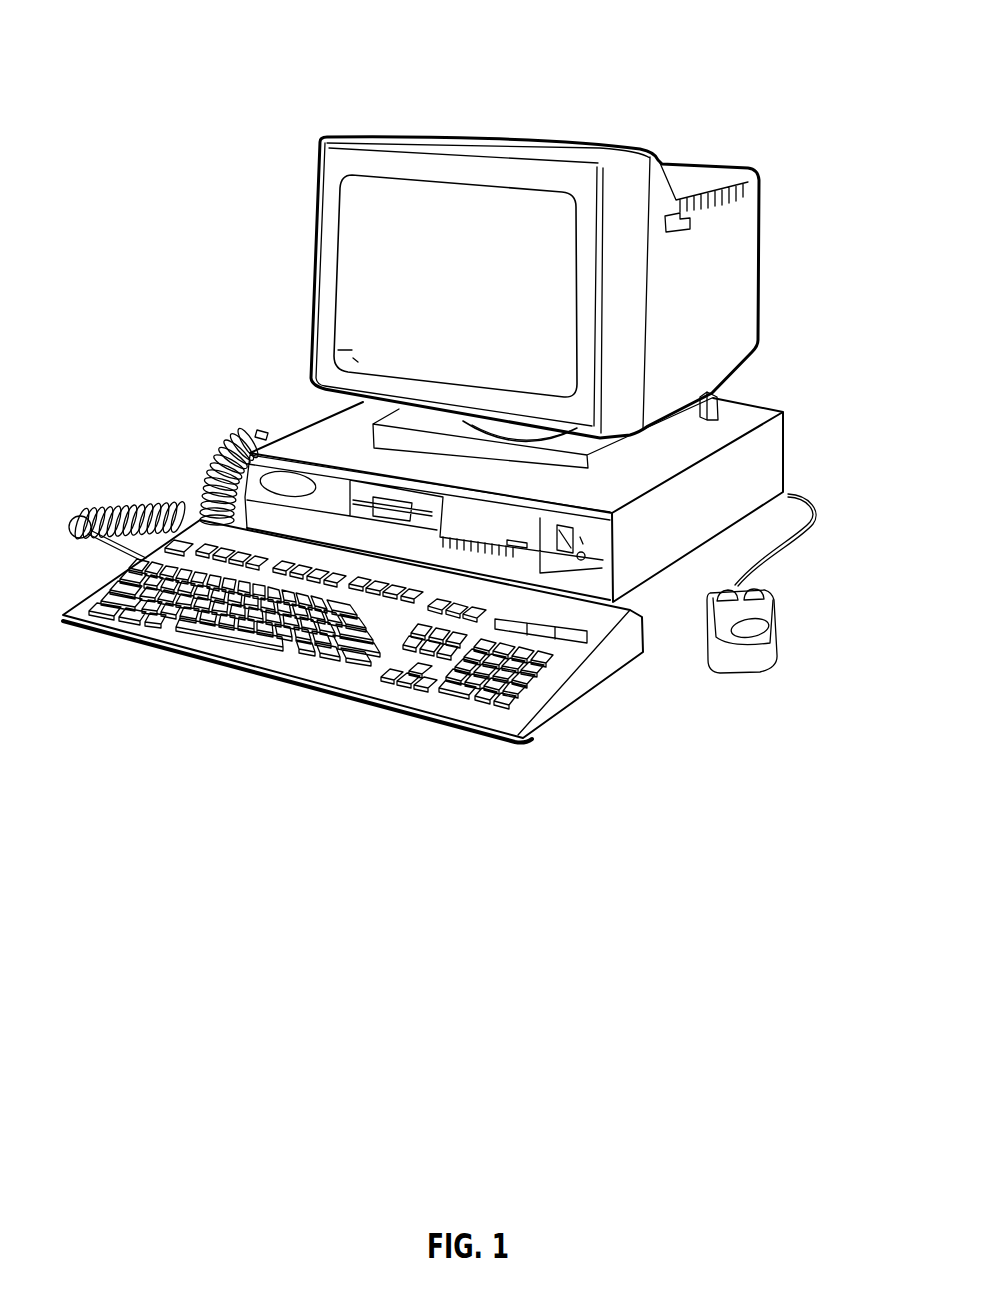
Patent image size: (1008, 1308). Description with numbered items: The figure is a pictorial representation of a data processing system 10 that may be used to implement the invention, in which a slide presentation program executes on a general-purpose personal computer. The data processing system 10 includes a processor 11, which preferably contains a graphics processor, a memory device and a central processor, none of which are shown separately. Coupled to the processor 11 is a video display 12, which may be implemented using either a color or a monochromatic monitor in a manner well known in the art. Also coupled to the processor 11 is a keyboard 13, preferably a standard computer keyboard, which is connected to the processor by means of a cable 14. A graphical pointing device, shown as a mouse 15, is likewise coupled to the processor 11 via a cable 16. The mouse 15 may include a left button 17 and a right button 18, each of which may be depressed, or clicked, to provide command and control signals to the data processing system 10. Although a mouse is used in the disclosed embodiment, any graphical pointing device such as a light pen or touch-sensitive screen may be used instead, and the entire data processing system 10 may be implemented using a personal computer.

The data processing system 10 is at (644, 104).
The processor 11 is at (773, 443).
The video display 12 is at (310, 265).
The keyboard 13 is at (347, 700).
The cable 14 is at (210, 453).
The mouse 15 is at (760, 662).
The cable 16 is at (788, 542).
The left button 17 is at (710, 598).
The right button 18 is at (757, 592).